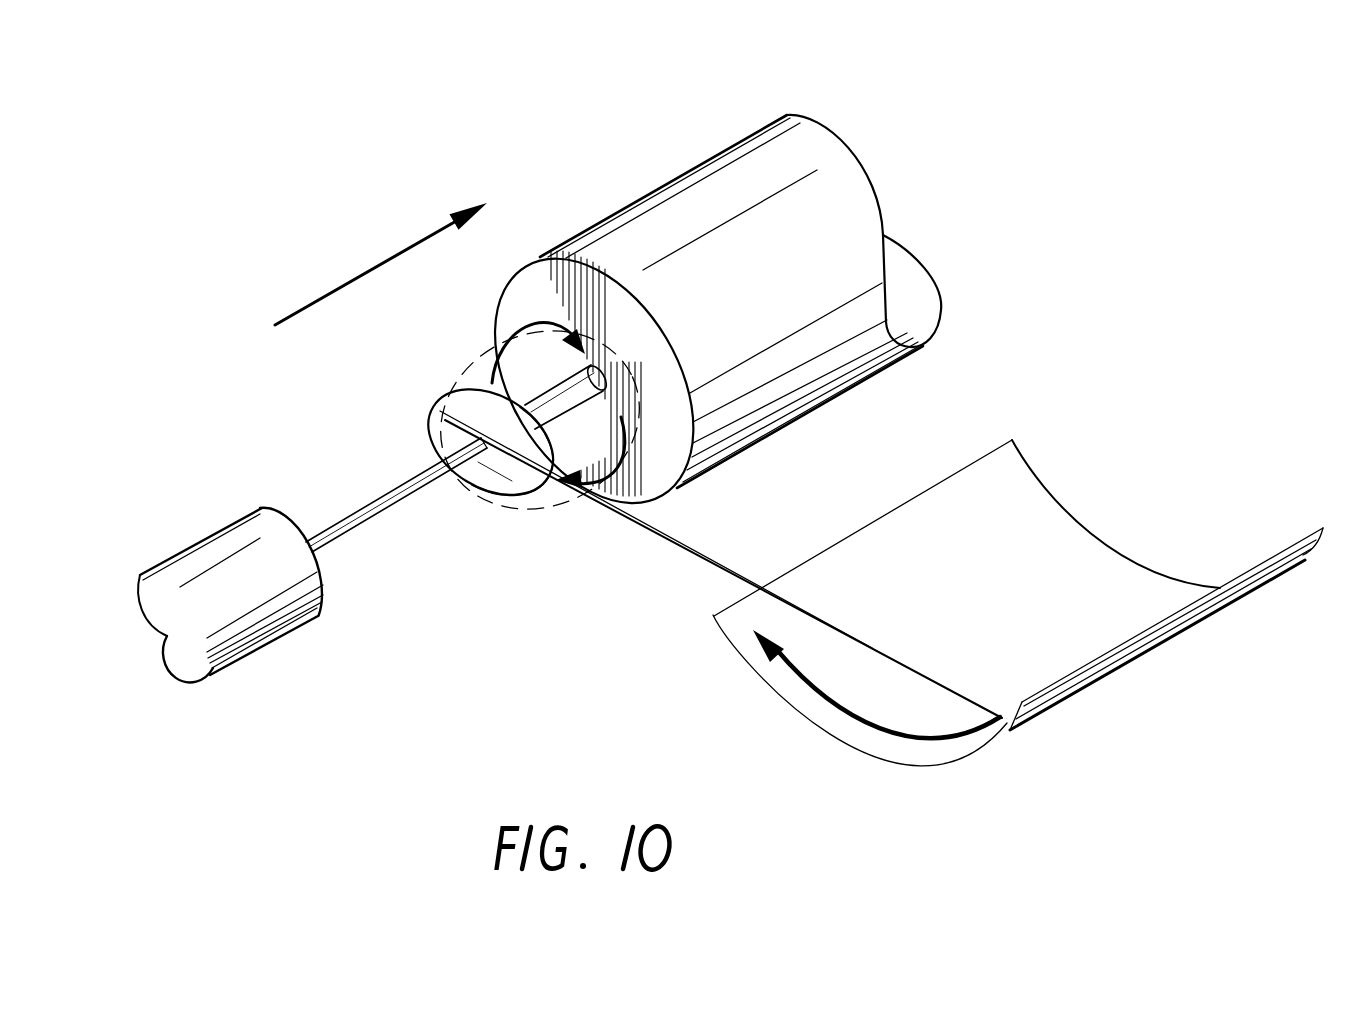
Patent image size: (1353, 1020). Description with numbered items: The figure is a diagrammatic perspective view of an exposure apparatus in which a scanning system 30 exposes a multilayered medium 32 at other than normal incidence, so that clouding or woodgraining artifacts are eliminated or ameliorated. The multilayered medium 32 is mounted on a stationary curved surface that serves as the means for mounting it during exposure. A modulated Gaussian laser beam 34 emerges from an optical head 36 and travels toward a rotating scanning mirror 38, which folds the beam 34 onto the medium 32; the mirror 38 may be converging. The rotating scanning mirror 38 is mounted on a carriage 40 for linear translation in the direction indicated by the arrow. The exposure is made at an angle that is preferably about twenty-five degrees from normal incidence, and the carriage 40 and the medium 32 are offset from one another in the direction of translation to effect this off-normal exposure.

The scanning system 30 is at (637, 88).
The multilayered medium 32 is at (864, 550).
The modulated Gaussian laser beam 34 is at (398, 490).
The optical head 36 is at (217, 552).
The rotating scanning mirror 38 is at (428, 423).
The carriage 40 is at (700, 193).